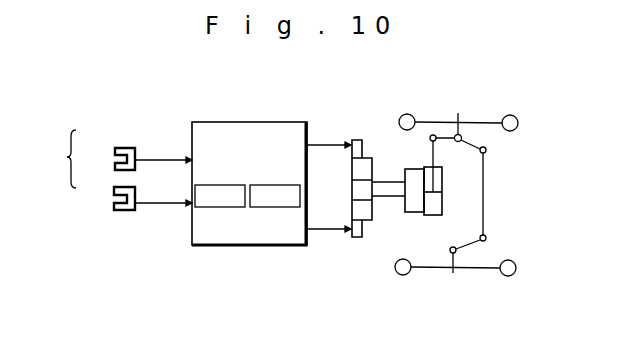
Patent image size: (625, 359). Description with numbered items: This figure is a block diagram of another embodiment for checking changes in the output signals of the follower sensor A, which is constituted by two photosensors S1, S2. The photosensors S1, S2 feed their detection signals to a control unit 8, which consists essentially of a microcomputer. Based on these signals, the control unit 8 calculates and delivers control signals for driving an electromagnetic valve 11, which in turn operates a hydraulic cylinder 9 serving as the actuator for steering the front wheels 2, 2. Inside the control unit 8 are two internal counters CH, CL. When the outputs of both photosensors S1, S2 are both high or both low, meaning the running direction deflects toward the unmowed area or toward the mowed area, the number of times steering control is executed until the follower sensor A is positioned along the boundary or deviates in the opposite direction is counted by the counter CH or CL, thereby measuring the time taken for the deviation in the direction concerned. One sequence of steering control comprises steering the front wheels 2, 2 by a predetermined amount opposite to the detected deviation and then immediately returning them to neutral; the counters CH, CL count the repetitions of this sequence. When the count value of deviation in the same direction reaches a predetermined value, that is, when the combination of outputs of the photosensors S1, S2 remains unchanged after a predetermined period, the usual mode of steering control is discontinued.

The front wheels 2 is at (433, 118).
The control unit 8 is at (221, 122).
The hydraulic cylinder 9 is at (442, 200).
The electromagnetic valve 11 is at (375, 217).
The follower sensor A is at (64, 159).
The photosensor S1 is at (116, 189).
The photosensor S2 is at (118, 149).
The internal counter CH is at (220, 208).
The internal counter CL is at (280, 208).